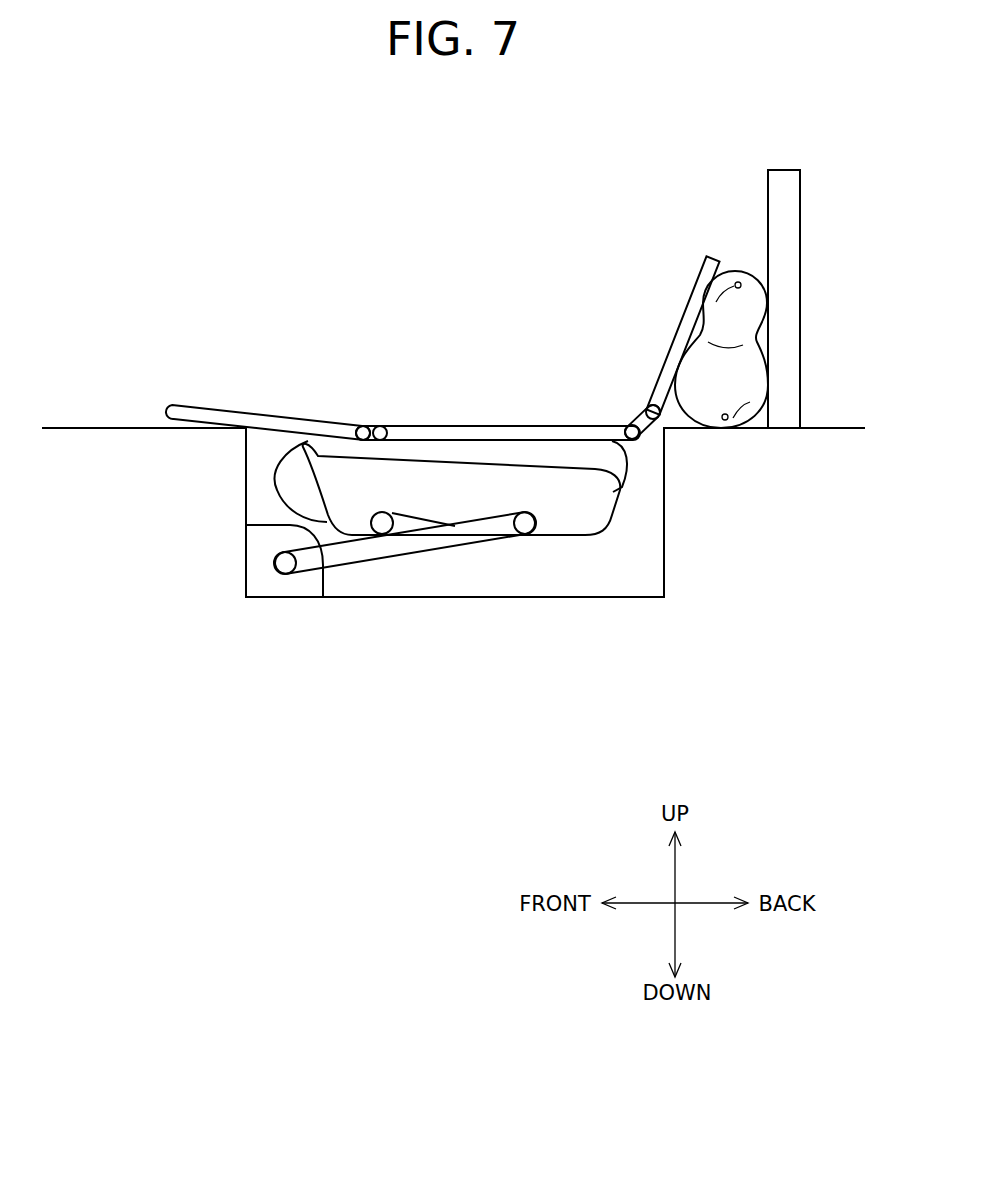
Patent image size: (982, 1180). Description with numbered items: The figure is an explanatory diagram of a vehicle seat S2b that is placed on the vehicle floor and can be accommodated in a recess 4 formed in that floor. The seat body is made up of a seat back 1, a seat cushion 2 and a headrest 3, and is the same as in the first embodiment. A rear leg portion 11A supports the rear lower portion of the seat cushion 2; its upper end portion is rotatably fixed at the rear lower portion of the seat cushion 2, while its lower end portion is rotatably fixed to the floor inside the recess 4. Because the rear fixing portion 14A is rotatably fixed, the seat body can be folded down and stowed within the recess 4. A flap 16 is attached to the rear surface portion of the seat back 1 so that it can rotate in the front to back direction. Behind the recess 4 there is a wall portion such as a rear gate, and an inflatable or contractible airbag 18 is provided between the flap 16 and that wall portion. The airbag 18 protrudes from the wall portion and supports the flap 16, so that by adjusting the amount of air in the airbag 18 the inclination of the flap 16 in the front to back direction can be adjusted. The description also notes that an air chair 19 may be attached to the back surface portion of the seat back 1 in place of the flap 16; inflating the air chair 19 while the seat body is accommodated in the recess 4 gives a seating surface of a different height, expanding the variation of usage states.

The vehicle seat S2b is at (174, 233).
The seat back 1 is at (613, 459).
The seat cushion 2 is at (785, 227).
The headrest 3 is at (293, 497).
The recess 4 is at (599, 568).
The rear leg portion 11A is at (360, 555).
The rear fixing portion 14A is at (266, 580).
The flap 16 is at (676, 322).
The airbag 18 is at (747, 292).
The air chair 19 is at (497, 425).